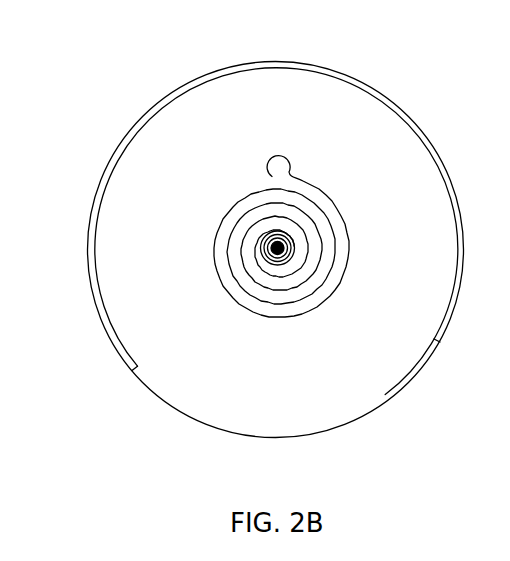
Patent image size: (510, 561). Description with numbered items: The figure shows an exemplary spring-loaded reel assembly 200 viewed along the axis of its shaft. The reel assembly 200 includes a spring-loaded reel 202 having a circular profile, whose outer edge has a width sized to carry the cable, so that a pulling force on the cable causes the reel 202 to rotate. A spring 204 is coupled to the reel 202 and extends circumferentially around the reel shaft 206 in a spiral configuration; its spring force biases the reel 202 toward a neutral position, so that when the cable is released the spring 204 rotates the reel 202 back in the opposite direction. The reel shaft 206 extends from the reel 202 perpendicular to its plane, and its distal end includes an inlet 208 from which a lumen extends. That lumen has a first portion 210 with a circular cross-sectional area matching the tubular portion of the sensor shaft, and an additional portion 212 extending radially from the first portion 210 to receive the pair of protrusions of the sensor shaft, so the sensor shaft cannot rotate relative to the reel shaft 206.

The reel assembly 200 is at (147, 71).
The spring-loaded reel 202 is at (116, 153).
The spring 204 is at (314, 191).
The reel shaft 206 is at (293, 232).
The inlet 208 is at (285, 247).
The first portion 210 is at (288, 252).
The additional portion 212 is at (277, 241).